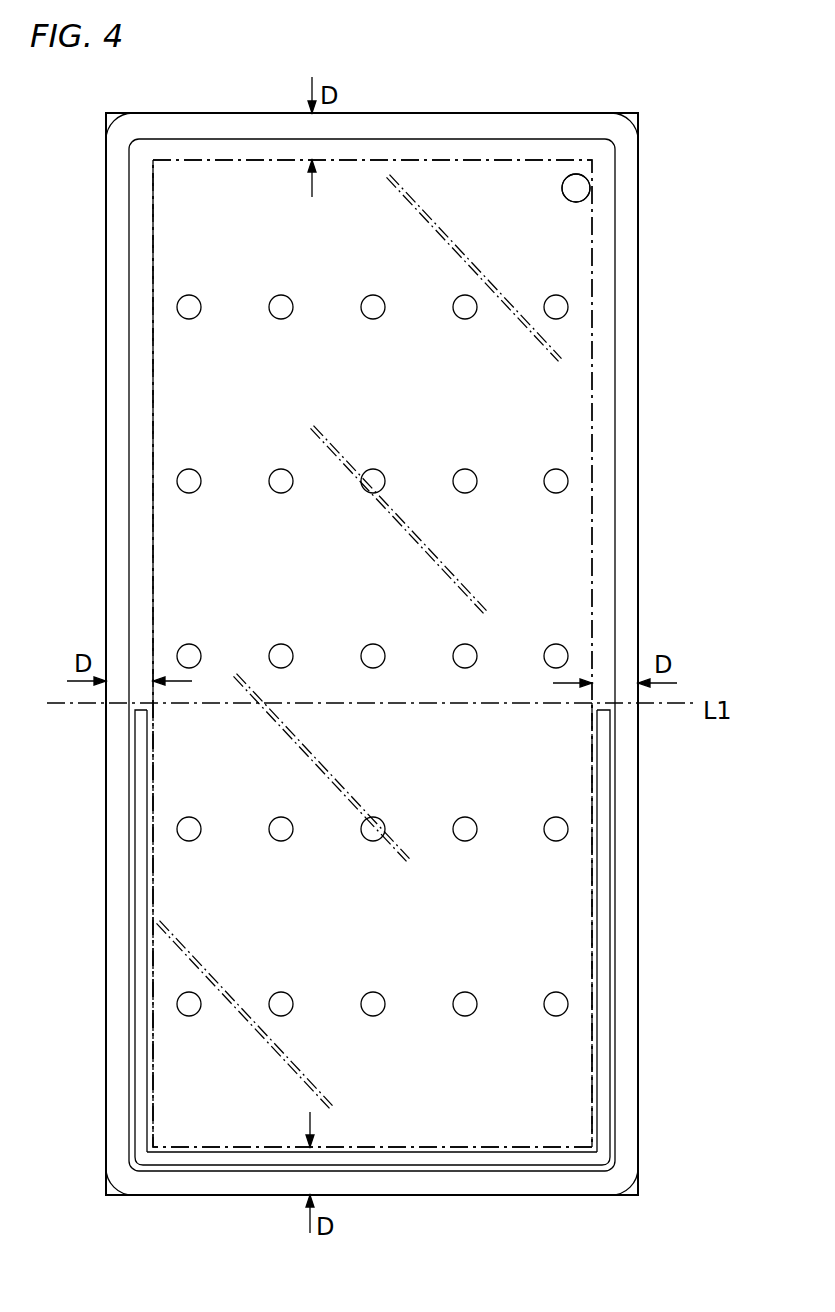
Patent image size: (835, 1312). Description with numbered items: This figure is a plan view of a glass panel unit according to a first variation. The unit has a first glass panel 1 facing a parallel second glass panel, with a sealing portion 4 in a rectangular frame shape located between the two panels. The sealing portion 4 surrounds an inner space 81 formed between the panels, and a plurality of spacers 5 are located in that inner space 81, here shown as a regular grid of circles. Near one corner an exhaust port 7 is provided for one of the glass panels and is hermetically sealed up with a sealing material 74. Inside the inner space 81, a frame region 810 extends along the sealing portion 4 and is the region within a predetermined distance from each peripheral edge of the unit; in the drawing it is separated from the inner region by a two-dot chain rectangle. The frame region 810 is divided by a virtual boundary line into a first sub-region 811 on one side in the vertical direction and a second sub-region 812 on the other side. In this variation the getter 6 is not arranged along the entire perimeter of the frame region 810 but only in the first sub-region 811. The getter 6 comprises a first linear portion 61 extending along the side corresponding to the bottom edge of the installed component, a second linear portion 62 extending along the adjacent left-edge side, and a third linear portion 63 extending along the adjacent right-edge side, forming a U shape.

The first glass panel 1 is at (163, 1065).
The sealing portion 4 is at (231, 126).
The spacers 5 is at (193, 820).
The getter 6 is at (225, 1167).
The first linear portion 61 is at (400, 1161).
The second linear portion 62 is at (140, 758).
The third linear portion 63 is at (601, 773).
The exhaust port 7 is at (569, 197).
The sealing material 74 is at (563, 190).
The inner space 81 is at (560, 533).
The frame region 810 is at (605, 896).
The first sub-region 811 is at (140, 887).
The second sub-region 812 is at (144, 380).